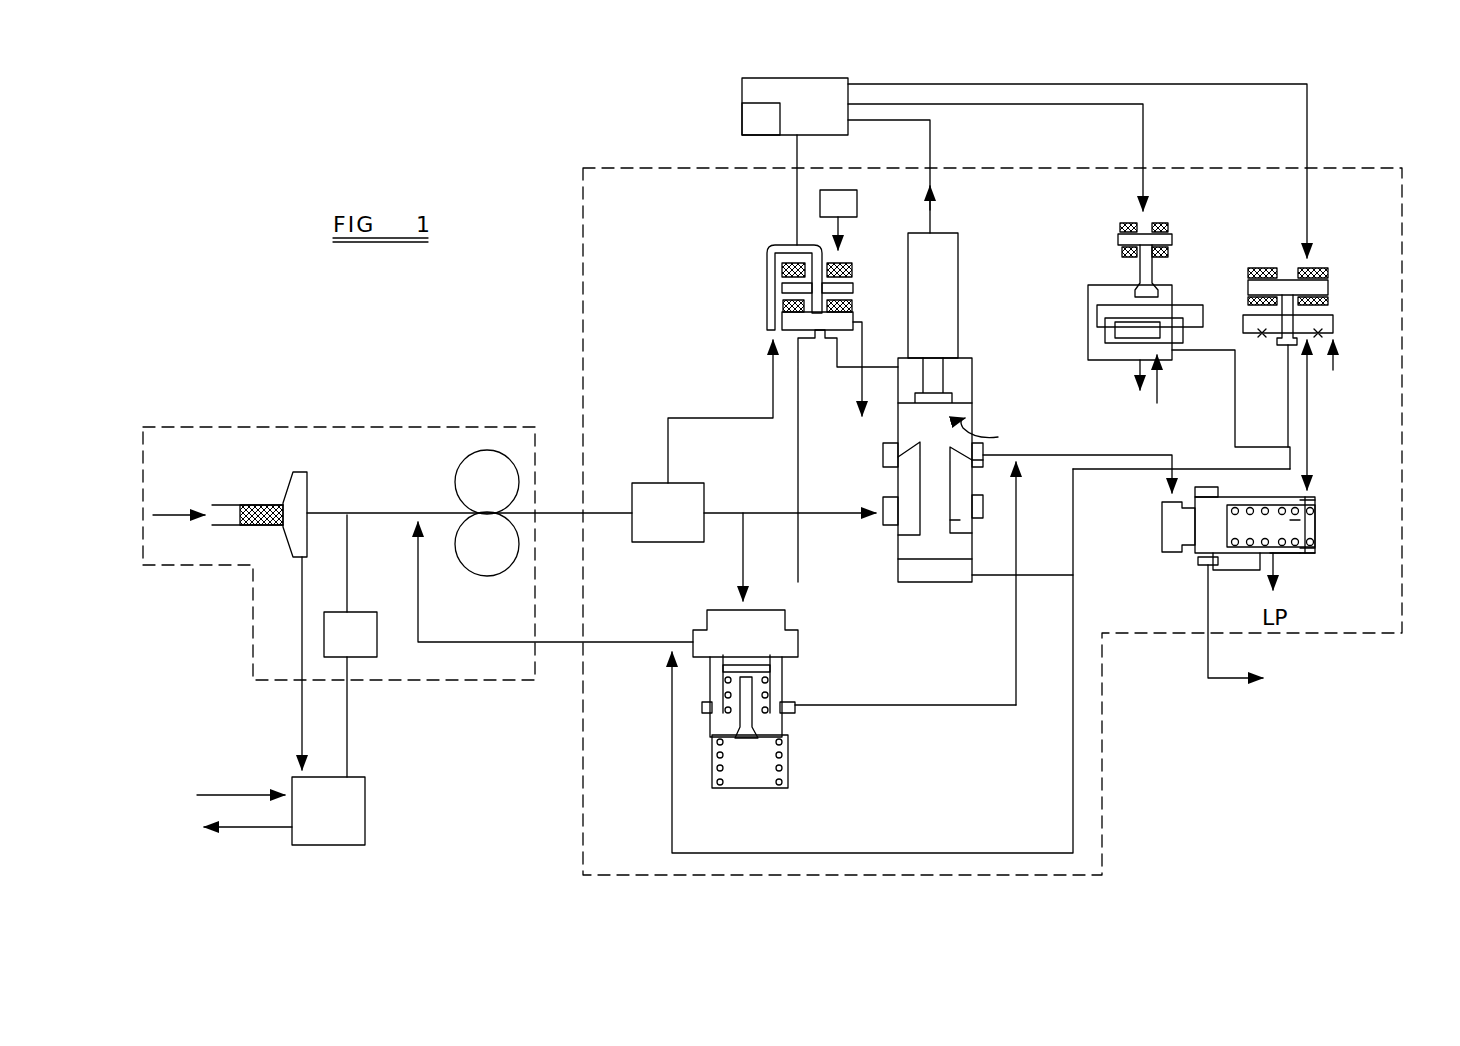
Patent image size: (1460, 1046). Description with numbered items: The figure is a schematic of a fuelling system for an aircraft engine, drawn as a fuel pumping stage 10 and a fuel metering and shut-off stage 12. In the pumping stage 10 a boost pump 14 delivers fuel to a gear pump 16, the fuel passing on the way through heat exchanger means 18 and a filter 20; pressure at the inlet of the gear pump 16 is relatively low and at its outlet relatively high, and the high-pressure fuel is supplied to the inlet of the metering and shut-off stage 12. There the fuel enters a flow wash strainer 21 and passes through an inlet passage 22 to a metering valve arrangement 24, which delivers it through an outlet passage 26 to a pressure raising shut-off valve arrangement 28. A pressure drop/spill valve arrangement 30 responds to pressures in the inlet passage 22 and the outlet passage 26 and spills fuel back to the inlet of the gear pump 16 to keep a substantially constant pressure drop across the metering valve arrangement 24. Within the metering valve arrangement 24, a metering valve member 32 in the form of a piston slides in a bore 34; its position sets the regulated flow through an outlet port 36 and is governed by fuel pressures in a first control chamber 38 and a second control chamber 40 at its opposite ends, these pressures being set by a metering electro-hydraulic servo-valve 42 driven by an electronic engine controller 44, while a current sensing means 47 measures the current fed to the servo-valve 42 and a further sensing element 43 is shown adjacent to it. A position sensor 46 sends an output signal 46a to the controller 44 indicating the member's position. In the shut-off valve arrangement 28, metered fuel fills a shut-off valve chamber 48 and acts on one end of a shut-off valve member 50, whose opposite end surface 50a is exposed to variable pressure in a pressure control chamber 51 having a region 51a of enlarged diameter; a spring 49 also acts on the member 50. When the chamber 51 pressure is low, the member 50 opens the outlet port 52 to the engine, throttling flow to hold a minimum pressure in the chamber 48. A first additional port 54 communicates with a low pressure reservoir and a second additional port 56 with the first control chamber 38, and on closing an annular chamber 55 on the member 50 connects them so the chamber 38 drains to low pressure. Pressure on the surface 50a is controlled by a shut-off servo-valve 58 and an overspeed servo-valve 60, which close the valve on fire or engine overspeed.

The fuel pumping stage 10 is at (243, 420).
The fuel metering and shut-off stage 12 is at (1408, 148).
The boost pump 14 is at (230, 530).
The gear pump 16 is at (487, 462).
The heat exchanger means 18 is at (355, 812).
The filter 20 is at (372, 638).
The flow wash strainer 21 is at (660, 543).
The inlet passage 22 is at (775, 512).
The metering valve arrangement 24 is at (984, 434).
The outlet passage 26 is at (1047, 455).
The pressure raising shut-off valve arrangement 28 is at (1326, 562).
The pressure drop/spill valve arrangement 30 is at (805, 755).
The metering valve member 32 is at (943, 520).
The bore 34 is at (993, 434).
The outlet port 36 is at (985, 465).
The first control chamber 38 is at (918, 572).
The second control chamber 40 is at (965, 479).
The metering electro-hydraulic servo-valve 42 is at (750, 275).
The position sensor 43 is at (852, 192).
The electronic engine controller 44 is at (980, 156).
The position sensor 46 is at (958, 249).
The output signal 46a is at (936, 196).
The current sensing means 47 is at (752, 122).
The shut-off valve chamber 48 is at (1178, 528).
The spring 49 is at (1248, 508).
The shut-off valve member 50 is at (1322, 512).
The end surface 50a is at (1312, 500).
The pressure control chamber 51 is at (1318, 505).
The region of enlarged diameter 51a is at (1318, 546).
The outlet port 52 is at (1200, 565).
The first additional port 54 is at (1294, 564).
The annular chamber 55 is at (1295, 522).
The second additional port 56 is at (1258, 565).
The shut-off electro-hydraulic servo-valve 58 is at (1343, 260).
The overspeed electro-hydraulic servo-valve 60 is at (1186, 215).